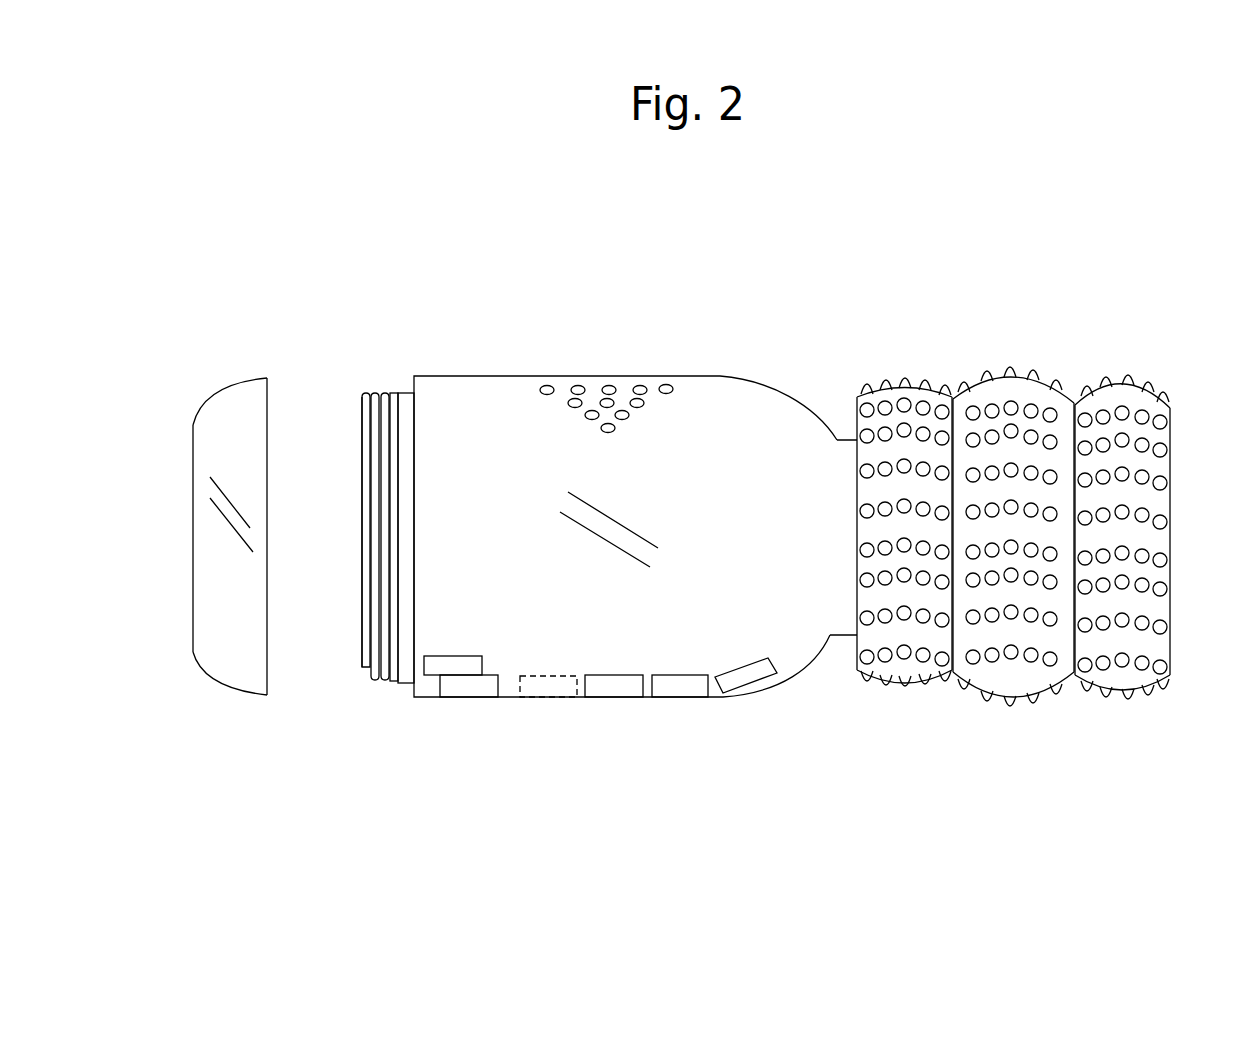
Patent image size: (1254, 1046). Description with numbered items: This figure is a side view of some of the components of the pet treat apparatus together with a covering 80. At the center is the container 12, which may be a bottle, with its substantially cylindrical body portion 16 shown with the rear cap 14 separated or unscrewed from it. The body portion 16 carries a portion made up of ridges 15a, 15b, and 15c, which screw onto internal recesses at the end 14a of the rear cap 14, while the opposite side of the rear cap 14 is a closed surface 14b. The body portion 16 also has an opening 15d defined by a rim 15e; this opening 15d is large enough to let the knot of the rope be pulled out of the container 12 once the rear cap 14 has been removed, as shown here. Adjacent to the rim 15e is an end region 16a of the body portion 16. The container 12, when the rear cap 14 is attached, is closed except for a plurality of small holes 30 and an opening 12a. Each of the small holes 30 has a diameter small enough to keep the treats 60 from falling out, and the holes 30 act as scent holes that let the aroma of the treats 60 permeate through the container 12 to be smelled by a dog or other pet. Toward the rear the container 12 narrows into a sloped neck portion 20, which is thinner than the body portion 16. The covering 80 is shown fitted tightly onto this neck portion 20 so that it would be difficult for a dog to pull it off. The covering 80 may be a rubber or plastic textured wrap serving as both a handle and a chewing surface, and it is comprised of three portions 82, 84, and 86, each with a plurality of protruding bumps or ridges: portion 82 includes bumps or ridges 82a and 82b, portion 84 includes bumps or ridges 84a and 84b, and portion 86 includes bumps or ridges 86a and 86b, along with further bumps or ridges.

The container 12 is at (645, 450).
The opening 12a is at (1173, 525).
The rear cap 14 is at (238, 467).
The end of rear cap 14a is at (268, 510).
The closed surface 14b is at (190, 533).
The ridge 15a is at (380, 392).
The ridge 15b is at (373, 387).
The ridge 15c is at (362, 395).
The opening 15d is at (353, 585).
The rim 15e is at (362, 672).
The body portion 16 is at (513, 372).
The front bezel 16a is at (408, 393).
The neck portion 20 is at (845, 427).
The small holes 30 is at (618, 372).
The treats 60 is at (545, 705).
The covering 80 is at (1026, 531).
The portion of covering 82 is at (886, 546).
The bumps or ridges 82a is at (862, 687).
The bumps or ridges 82b is at (910, 395).
The portion of covering 84 is at (1009, 531).
The bumps or ridges 84a is at (982, 707).
The bumps or ridges 84b is at (995, 402).
The portion of covering 86 is at (1163, 551).
The bumps or ridges 86a is at (1098, 707).
The bumps or ridges 86b is at (1125, 410).